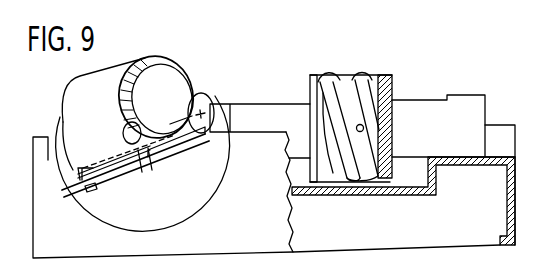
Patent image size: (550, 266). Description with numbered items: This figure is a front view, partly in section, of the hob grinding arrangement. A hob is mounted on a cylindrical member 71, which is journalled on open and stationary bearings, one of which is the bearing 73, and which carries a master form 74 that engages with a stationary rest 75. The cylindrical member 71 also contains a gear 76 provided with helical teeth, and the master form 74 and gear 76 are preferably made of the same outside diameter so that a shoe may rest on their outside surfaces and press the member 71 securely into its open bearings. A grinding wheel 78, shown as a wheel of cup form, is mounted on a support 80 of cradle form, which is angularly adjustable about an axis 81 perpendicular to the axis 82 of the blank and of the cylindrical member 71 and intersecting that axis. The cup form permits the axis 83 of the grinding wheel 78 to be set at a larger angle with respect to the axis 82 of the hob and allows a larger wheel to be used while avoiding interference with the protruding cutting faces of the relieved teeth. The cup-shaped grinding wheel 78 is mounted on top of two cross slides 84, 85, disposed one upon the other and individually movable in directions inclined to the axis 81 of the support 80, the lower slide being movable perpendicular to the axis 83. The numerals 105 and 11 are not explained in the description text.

The cylindrical member 71 is at (295, 127).
The open bearing 73 is at (495, 141).
The master form 74 is at (330, 82).
The stationary rest 75 is at (360, 75).
The gear 76 is at (391, 80).
The grinding wheel 78 is at (130, 133).
The support 80 is at (198, 180).
The axis 81 is at (137, 128).
The axis 82 is at (458, 128).
The axis 83 is at (160, 127).
The cross slide 84 is at (192, 143).
The cross slide 85 is at (82, 173).
The base 105 is at (266, 201).
The frame 11 is at (513, 263).